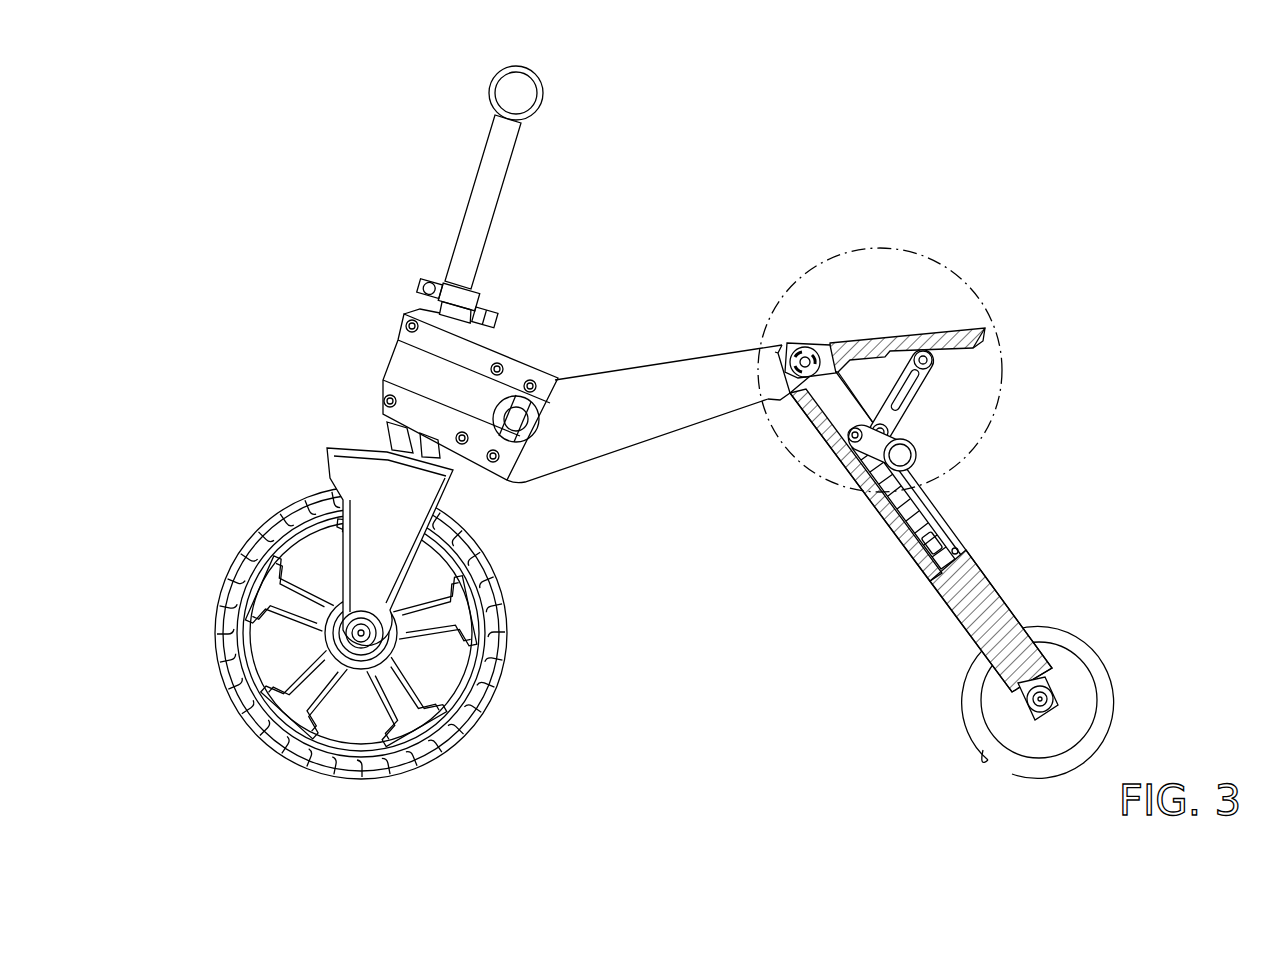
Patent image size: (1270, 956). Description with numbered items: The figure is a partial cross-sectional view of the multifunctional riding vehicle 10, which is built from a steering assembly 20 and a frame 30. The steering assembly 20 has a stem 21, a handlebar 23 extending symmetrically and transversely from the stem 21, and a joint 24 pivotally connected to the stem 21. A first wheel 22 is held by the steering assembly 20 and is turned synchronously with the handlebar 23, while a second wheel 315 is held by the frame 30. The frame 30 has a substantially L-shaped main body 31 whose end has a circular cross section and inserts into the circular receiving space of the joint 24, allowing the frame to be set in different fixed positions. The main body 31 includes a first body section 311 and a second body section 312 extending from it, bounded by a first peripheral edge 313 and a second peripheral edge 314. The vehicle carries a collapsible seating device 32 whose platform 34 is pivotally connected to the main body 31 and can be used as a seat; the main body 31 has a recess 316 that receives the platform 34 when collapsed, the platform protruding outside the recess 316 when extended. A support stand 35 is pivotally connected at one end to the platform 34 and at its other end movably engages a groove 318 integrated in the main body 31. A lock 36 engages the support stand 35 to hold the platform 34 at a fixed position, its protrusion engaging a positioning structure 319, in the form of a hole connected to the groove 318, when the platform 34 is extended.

The multifunctional riding vehicle 10 is at (800, 193).
The steering assembly 20 is at (406, 246).
The stem 21 is at (480, 205).
The first wheel 22 is at (280, 506).
The handlebar 23 is at (502, 97).
The joint 24 is at (405, 366).
The frame 30 is at (838, 300).
The main body 31 is at (762, 405).
The first body section 311 is at (660, 372).
The second body section 312 is at (962, 615).
The first peripheral edge 313 is at (776, 344).
The second peripheral edge 314 is at (780, 405).
The second wheel 315 is at (1082, 652).
The recess 316 is at (930, 500).
The groove 318 is at (915, 548).
The positioning structure 319 is at (920, 577).
The collapsible seating device 32 is at (888, 330).
The platform 34 is at (937, 340).
The support stand 35 is at (925, 384).
The lock 36 is at (928, 455).